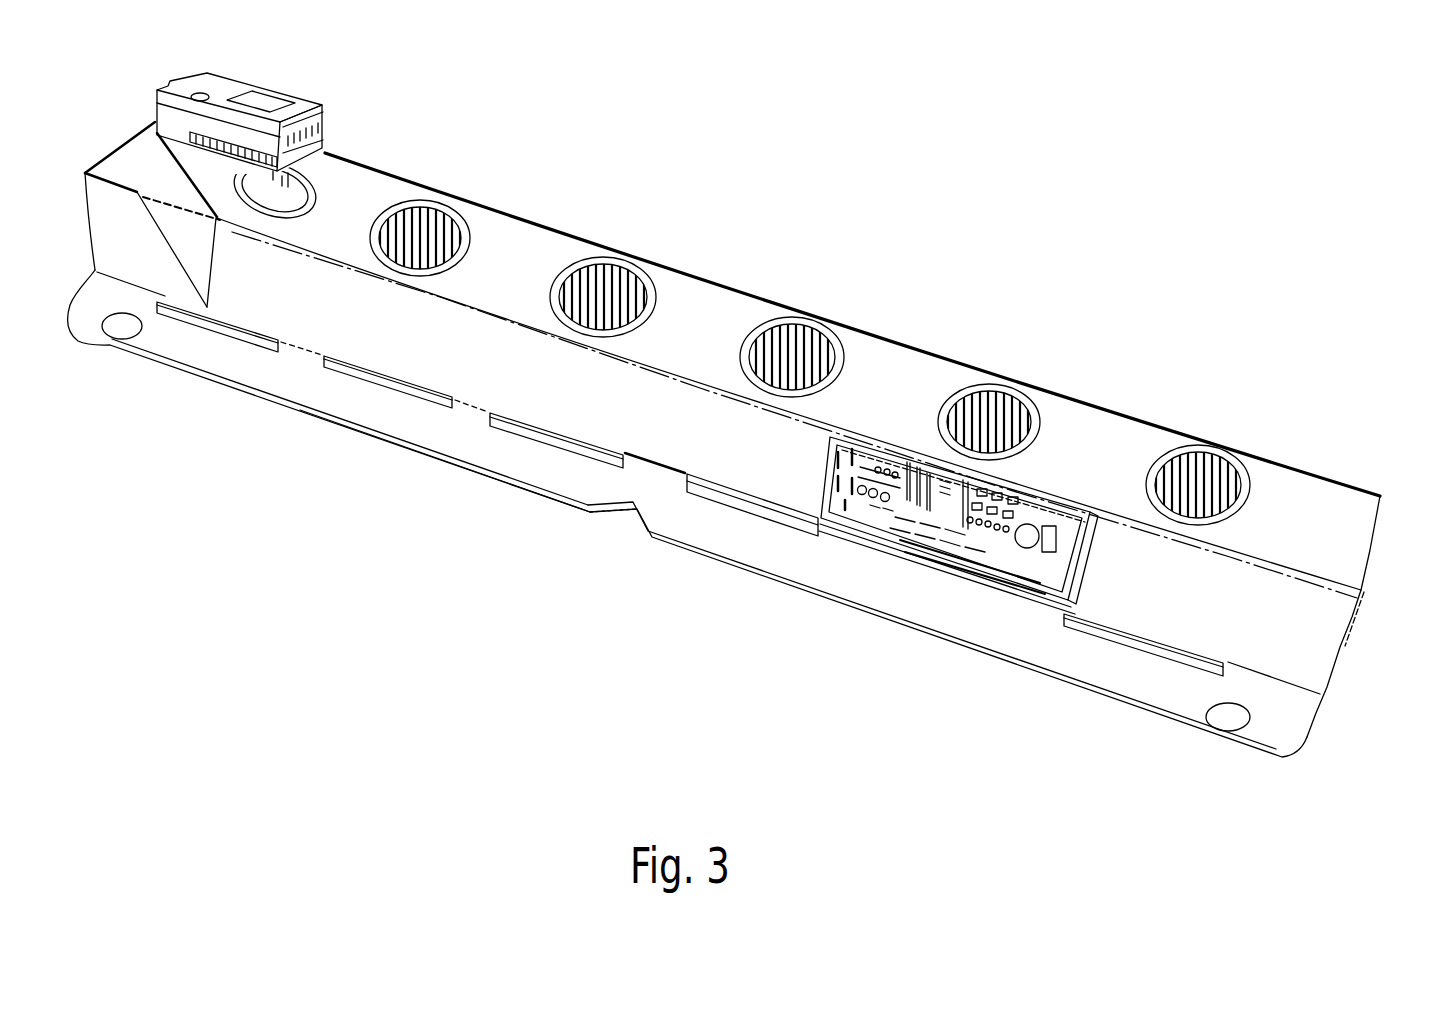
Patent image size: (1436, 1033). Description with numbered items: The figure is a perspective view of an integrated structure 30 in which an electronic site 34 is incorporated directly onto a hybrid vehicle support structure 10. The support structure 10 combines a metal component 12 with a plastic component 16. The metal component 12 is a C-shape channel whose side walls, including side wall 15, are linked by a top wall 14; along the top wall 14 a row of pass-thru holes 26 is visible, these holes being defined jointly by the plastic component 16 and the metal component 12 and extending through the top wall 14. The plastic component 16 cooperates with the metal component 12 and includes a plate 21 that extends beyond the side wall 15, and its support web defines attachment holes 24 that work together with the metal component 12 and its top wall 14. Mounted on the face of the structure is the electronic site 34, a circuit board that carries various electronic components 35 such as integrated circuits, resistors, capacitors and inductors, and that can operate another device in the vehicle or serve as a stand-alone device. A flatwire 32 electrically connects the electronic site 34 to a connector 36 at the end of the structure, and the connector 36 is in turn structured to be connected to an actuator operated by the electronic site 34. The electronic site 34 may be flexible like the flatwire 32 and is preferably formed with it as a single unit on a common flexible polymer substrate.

The vehicle support structure 10 is at (884, 282).
The metal component 12 is at (1301, 467).
The top wall 14 is at (1346, 551).
The side wall 15 is at (1318, 627).
The plastic component 16 is at (498, 481).
The plate 21 is at (800, 557).
The attachment holes 24 is at (1197, 460).
The pass-thru holes 26 is at (428, 212).
The integrated structure 30 is at (555, 584).
The flatwire 32 is at (417, 357).
The electronic site 34 is at (1071, 495).
The electronic components 35 is at (885, 502).
The connector 36 is at (293, 100).